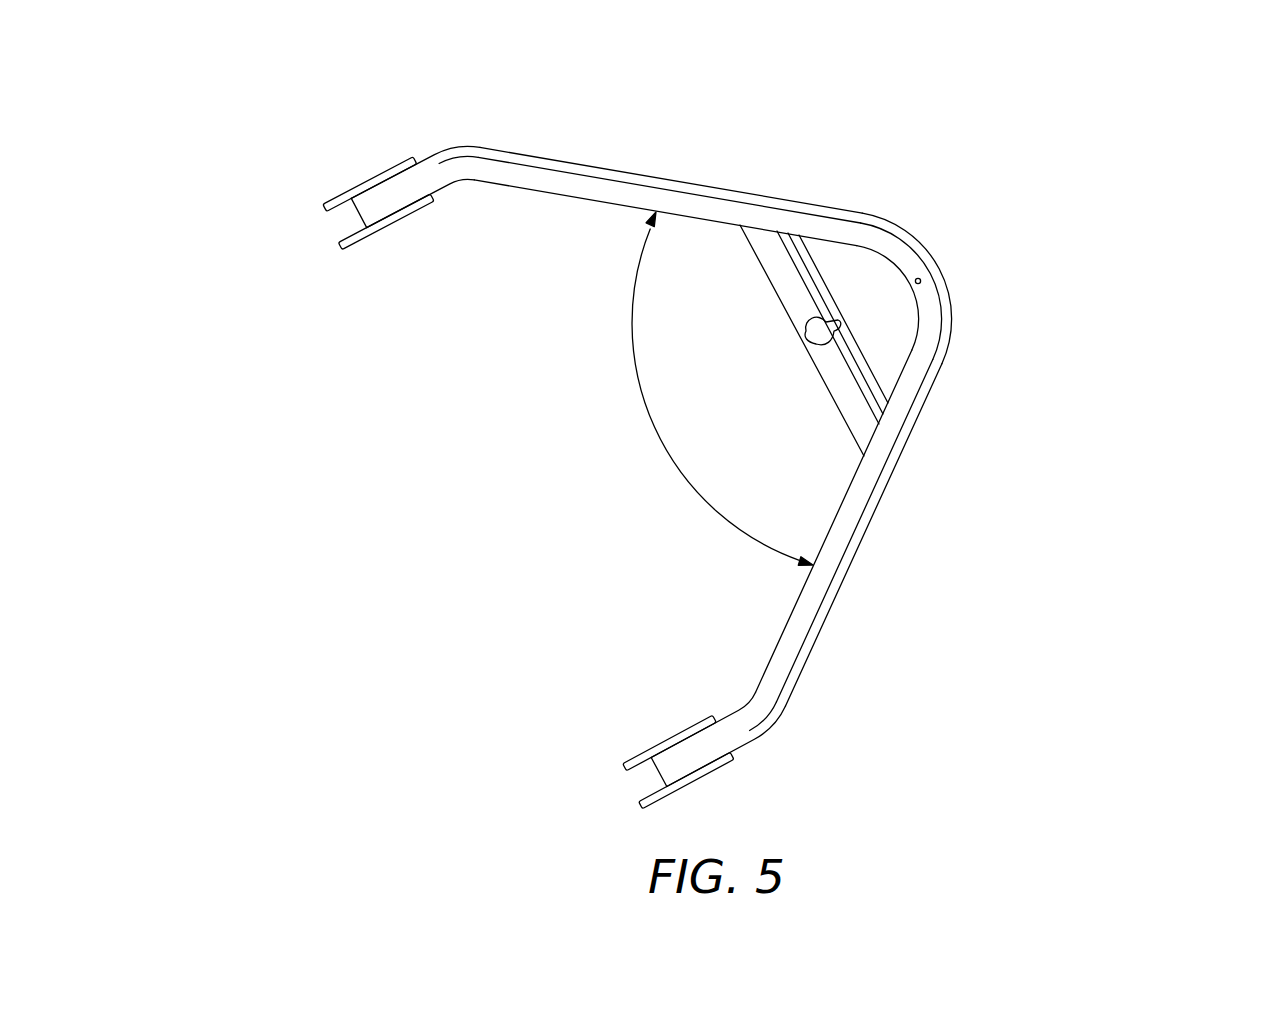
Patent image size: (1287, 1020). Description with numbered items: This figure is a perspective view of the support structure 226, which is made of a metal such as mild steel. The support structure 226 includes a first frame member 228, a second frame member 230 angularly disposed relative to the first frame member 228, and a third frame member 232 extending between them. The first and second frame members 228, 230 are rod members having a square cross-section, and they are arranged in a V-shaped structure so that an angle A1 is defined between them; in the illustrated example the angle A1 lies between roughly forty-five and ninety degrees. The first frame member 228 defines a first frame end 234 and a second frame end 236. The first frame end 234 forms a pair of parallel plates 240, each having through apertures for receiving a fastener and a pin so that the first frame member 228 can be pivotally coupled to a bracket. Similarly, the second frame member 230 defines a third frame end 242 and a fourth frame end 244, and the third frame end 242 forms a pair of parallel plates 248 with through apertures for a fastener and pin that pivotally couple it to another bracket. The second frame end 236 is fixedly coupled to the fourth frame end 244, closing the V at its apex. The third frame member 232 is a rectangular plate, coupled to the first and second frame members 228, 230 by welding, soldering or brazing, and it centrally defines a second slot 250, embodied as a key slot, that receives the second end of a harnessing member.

The support structure 226 is at (703, 429).
The first frame member 228 is at (833, 523).
The second frame member 230 is at (654, 202).
The third frame member 232 is at (773, 241).
The first frame end 234 is at (632, 790).
The second frame end 236 is at (978, 347).
The parallel plates 240 is at (626, 773).
The third frame end 242 is at (328, 231).
The fourth frame end 244 is at (917, 207).
The parallel plates 248 is at (323, 212).
The second slot 250 is at (812, 342).
The angle A1 is at (644, 401).